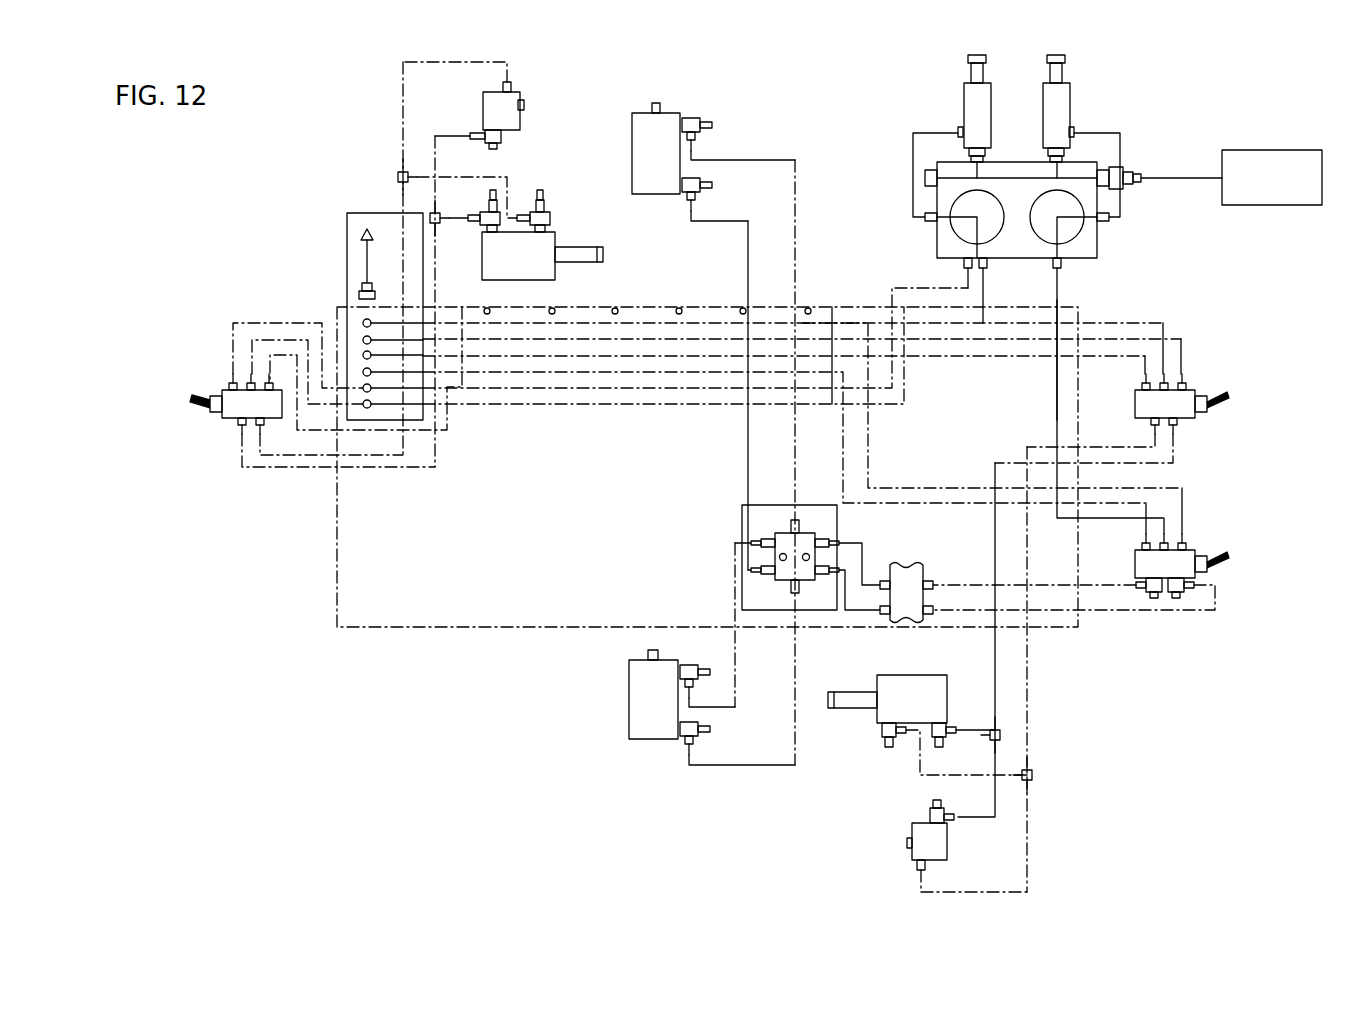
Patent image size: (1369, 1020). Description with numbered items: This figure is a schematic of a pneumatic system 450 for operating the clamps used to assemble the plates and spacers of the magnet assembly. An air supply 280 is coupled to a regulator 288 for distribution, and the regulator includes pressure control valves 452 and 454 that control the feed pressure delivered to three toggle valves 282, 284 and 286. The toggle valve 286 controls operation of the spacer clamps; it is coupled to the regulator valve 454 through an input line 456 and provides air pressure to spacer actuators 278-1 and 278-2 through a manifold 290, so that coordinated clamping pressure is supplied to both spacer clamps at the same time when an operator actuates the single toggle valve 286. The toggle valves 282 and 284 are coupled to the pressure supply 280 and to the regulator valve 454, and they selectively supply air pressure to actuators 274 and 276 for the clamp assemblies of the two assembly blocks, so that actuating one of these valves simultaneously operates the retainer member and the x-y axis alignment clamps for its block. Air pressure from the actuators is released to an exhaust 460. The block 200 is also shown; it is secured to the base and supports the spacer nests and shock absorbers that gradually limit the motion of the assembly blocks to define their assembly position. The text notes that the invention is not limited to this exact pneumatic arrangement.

The block 200 is at (928, 563).
The actuator 274 is at (528, 100).
The actuator 276 is at (552, 238).
The spacer actuator 278-1 is at (697, 120).
The spacer actuator 278-2 is at (630, 655).
The air supply 280 is at (1248, 150).
The toggle valve 282 is at (1200, 388).
The toggle valve 284 is at (208, 385).
The toggle valve 286 is at (1190, 548).
The regulator 288 is at (1178, 100).
The manifold 290 is at (742, 535).
The pneumatic system 450 is at (1112, 171).
The pressure control valve 452 is at (1069, 103).
The pressure control valve 454 is at (963, 102).
The input line 456 is at (1057, 405).
The exhaust 460 is at (347, 262).